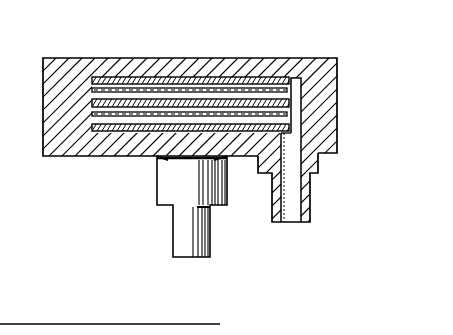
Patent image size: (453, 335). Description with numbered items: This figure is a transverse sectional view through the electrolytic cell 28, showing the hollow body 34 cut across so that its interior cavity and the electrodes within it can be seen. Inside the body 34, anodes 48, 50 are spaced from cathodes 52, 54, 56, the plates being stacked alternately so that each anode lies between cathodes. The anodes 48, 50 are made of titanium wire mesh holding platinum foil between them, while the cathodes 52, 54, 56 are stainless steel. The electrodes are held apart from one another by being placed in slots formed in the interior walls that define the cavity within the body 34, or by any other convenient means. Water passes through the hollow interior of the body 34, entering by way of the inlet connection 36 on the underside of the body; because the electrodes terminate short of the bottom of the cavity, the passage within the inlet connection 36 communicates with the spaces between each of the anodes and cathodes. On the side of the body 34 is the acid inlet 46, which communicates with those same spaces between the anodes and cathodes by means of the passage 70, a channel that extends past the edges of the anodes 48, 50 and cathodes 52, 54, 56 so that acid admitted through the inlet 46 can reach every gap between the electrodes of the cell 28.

The electrolytic cell 28 is at (369, 149).
The hollow body 34 is at (68, 67).
The inlet connection 36 is at (167, 193).
The acid inlet 46 is at (318, 173).
The anode 48 is at (133, 117).
The anode 50 is at (170, 93).
The cathode 52 is at (262, 80).
The cathode 54 is at (225, 103).
The cathode 56 is at (118, 133).
The passage 70 is at (297, 95).